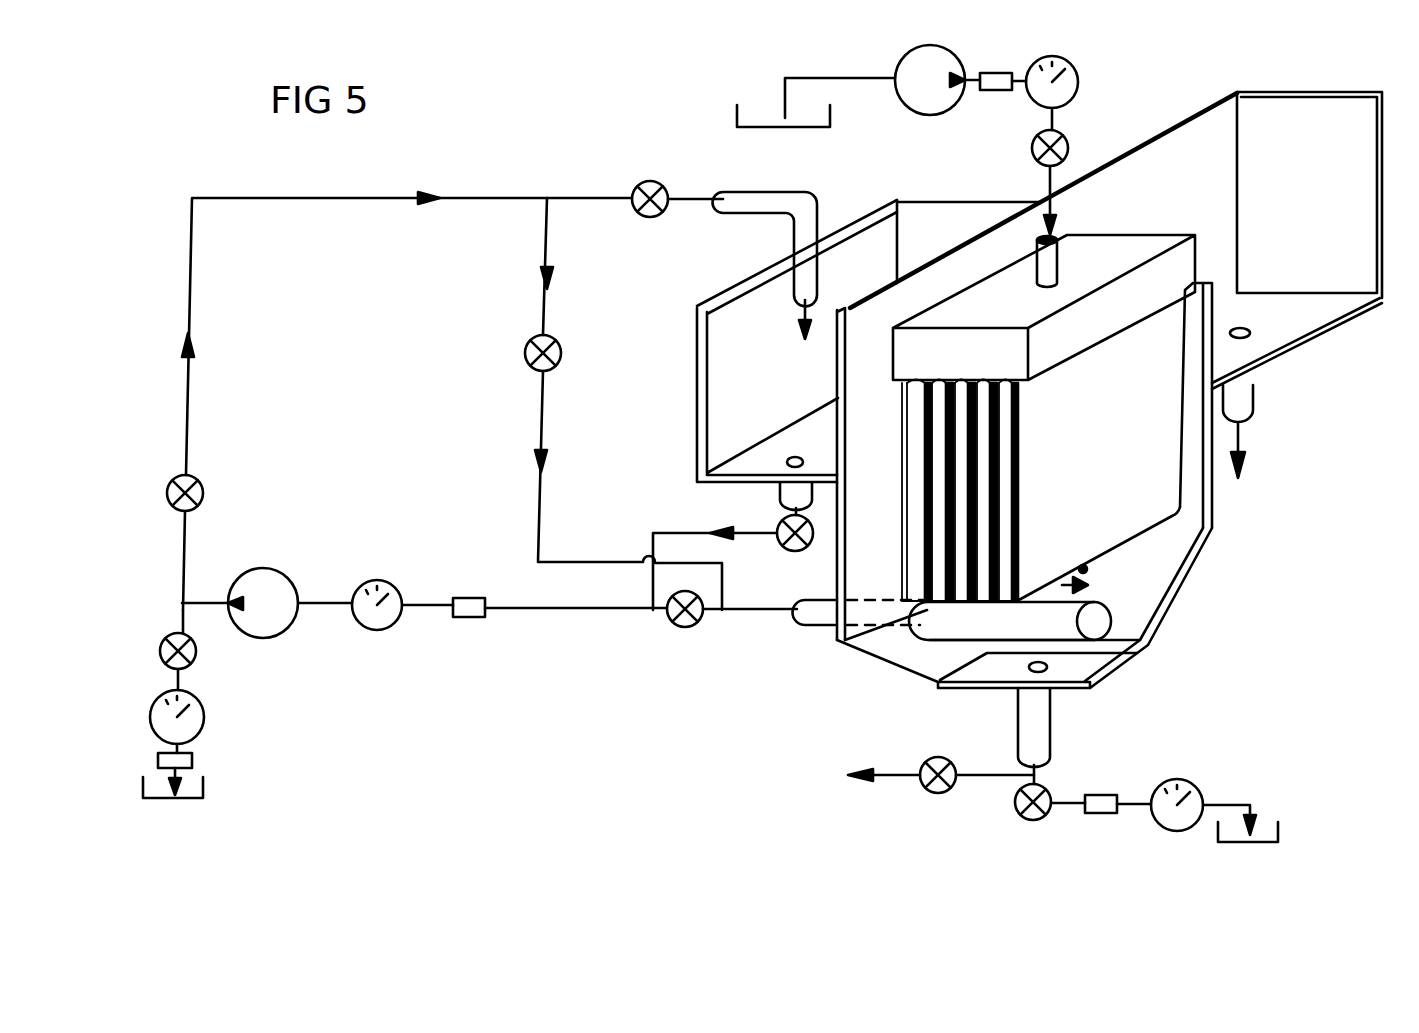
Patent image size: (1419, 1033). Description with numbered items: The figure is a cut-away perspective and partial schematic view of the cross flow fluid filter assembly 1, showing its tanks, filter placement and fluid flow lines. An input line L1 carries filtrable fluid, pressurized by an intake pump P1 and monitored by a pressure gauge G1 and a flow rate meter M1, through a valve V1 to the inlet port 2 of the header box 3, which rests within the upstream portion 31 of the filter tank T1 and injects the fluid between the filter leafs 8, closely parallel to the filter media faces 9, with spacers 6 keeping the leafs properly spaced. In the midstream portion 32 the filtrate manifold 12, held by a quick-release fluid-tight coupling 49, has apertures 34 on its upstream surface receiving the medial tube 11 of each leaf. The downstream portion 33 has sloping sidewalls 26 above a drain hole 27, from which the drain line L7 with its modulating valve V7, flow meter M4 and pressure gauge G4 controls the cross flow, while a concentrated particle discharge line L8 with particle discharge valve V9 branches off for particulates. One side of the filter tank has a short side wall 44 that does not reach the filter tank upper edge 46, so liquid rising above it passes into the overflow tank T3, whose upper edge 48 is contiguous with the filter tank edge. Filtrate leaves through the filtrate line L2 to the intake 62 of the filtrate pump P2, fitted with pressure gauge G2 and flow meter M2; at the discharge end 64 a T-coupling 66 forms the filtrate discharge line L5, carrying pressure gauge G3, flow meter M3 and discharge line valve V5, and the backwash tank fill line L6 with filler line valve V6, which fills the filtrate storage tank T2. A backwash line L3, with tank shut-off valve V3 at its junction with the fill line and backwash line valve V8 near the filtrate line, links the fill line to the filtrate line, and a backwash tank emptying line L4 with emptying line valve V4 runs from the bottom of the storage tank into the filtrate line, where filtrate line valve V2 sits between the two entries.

The cross flow fluid filter assembly 1 is at (1295, 405).
The inlet port 2 is at (1060, 240).
The header box 3 is at (1125, 243).
The spacers 6 is at (990, 379).
The filter leafs 8 is at (915, 538).
The filter media faces 9 is at (1200, 548).
The medial tube 11 is at (1087, 567).
The filtrate manifold 12 is at (1112, 618).
The sloping sidewalls 26 is at (1182, 592).
The drain hole 27 is at (1028, 667).
The upstream portion 31 is at (880, 367).
The midstream portion 32 is at (890, 483).
The downstream portion 33 is at (923, 662).
The apertures 34 is at (1092, 583).
The short side wall 44 is at (1212, 495).
The filter tank upper edge 46 is at (960, 237).
The overflow tank upper edge 48 is at (1308, 92).
The quick-release fluid-tight coupling 49 is at (863, 647).
The intake 62 is at (300, 603).
The discharge end 64 is at (207, 603).
The T-coupling 66 is at (181, 600).
The filter tank T1 is at (883, 428).
The filtrate storage tank T2 is at (758, 398).
The overflow tank T3 is at (1327, 227).
The input line L1 is at (818, 78).
The filtrate line L2 is at (560, 609).
The backwash line L3 is at (549, 233).
The backwash tank emptying line L4 is at (692, 533).
The filtrate discharge line L5 is at (180, 618).
The backwash tank fill line L6 is at (189, 428).
The drain line L7 is at (1038, 778).
The concentrated particle discharge line L8 is at (983, 776).
The intake pump P1 is at (903, 57).
The filtrate pump P2 is at (268, 638).
The flow rate meter M1 is at (997, 73).
The flow meter M2 is at (468, 617).
The flow meter M3 is at (192, 760).
The flow meter M4 is at (1110, 813).
The pressure gauge G1 is at (1078, 72).
The pressure gauge G2 is at (393, 630).
The pressure gauge G3 is at (204, 714).
The pressure gauge G4 is at (1195, 785).
The valve V1 is at (1064, 141).
The filtrate line valve V2 is at (685, 627).
The tank shut-off valve V3 is at (640, 185).
The emptying line valve V4 is at (790, 551).
The discharge line valve V5 is at (196, 651).
The filler line valve V6 is at (203, 493).
The modulating valve V7 is at (1040, 819).
The backwash line valve V8 is at (527, 347).
The particle discharge valve V9 is at (930, 762).